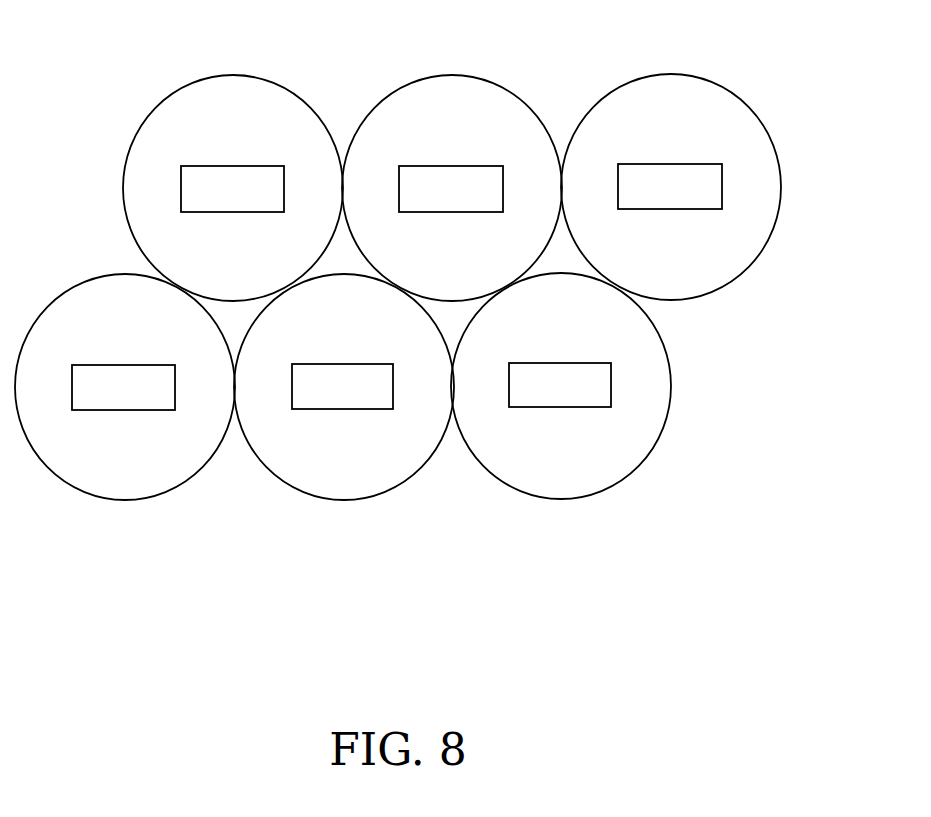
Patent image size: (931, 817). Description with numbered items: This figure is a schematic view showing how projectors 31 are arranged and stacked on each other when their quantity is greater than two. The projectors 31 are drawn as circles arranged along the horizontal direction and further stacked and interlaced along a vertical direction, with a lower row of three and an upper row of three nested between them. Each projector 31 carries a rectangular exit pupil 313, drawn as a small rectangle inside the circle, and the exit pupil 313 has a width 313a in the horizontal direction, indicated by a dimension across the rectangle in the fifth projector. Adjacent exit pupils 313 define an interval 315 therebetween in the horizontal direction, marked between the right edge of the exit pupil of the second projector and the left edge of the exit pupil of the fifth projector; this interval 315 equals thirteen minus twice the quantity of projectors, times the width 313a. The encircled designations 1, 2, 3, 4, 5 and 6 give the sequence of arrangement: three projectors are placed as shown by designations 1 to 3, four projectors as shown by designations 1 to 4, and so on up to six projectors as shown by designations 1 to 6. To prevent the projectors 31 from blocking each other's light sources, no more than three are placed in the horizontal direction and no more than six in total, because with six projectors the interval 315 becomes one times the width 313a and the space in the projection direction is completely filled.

The projector 31 is at (676, 190).
The exit pupil 313 is at (712, 209).
The width of exit pupil 313a is at (611, 360).
The interval 315 is at (393, 412).
The designation 1 is at (125, 387).
The designation 2 is at (344, 387).
The designation 3 is at (233, 188).
The designation 4 is at (452, 188).
The designation 5 is at (561, 386).
The designation 6 is at (671, 187).